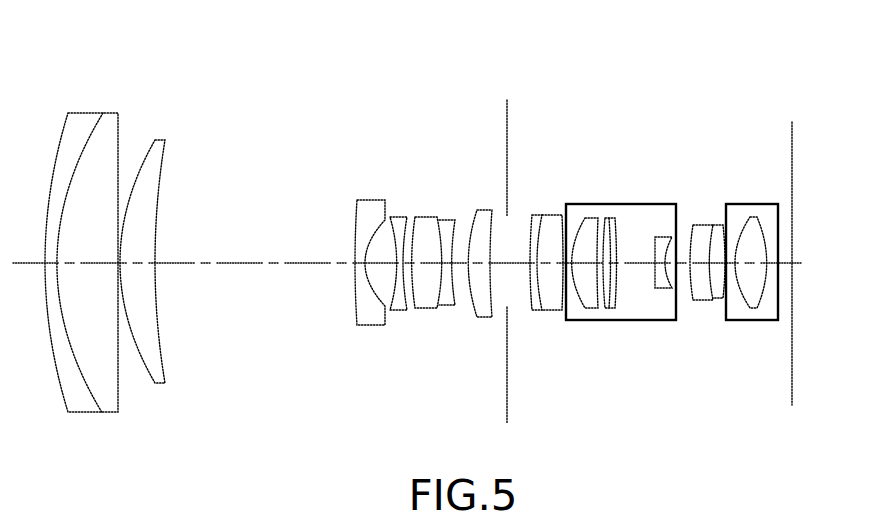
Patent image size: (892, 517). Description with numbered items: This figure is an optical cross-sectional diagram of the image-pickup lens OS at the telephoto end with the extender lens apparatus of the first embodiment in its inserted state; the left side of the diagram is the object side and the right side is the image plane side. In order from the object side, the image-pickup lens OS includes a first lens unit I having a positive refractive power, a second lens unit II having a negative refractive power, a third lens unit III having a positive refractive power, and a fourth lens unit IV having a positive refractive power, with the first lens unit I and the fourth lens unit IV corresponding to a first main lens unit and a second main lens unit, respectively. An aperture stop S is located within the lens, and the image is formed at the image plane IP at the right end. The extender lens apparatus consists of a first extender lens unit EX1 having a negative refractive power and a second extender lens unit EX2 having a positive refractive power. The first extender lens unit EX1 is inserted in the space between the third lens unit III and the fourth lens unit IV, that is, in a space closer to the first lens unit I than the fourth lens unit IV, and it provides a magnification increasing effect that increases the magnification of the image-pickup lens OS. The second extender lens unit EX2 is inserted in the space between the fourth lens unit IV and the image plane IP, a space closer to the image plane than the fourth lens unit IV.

The image-pickup lens OS is at (378, 80).
The first lens unit I is at (72, 100).
The second lens unit II is at (455, 180).
The third lens unit III is at (477, 180).
The fourth lens unit IV is at (685, 178).
The aperture stop S is at (506, 249).
The first extender lens unit EX1 is at (621, 278).
The second extender lens unit EX2 is at (752, 278).
The image plane IP is at (798, 249).